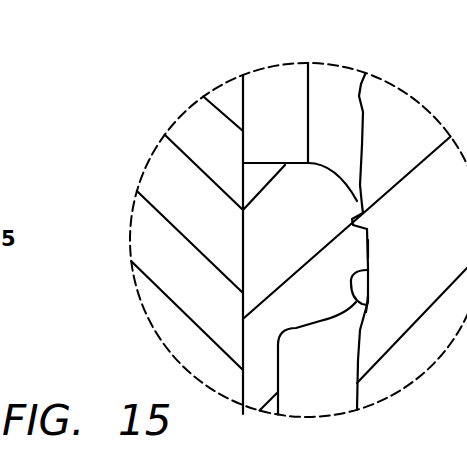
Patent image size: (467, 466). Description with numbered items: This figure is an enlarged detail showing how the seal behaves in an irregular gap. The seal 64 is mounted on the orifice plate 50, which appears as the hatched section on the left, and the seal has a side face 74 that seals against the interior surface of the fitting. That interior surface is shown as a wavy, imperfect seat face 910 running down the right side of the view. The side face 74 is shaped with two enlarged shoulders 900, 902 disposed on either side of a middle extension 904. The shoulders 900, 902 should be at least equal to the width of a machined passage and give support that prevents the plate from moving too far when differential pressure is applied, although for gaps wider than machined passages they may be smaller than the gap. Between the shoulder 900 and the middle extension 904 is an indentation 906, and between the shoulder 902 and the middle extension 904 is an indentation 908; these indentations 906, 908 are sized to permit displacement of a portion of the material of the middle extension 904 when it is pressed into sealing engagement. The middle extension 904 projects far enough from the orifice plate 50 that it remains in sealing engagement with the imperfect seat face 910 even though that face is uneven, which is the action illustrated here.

The orifice plate 50 is at (200, 122).
The imperfect seat face 910 is at (361, 85).
The seal 64 is at (330, 176).
The enlarged shoulder 900 is at (362, 190).
The indentation 906 is at (368, 218).
The middle extension 904 is at (368, 247).
The indentation 908 is at (352, 276).
The enlarged shoulder 902 is at (366, 304).
The side face 74 is at (322, 320).